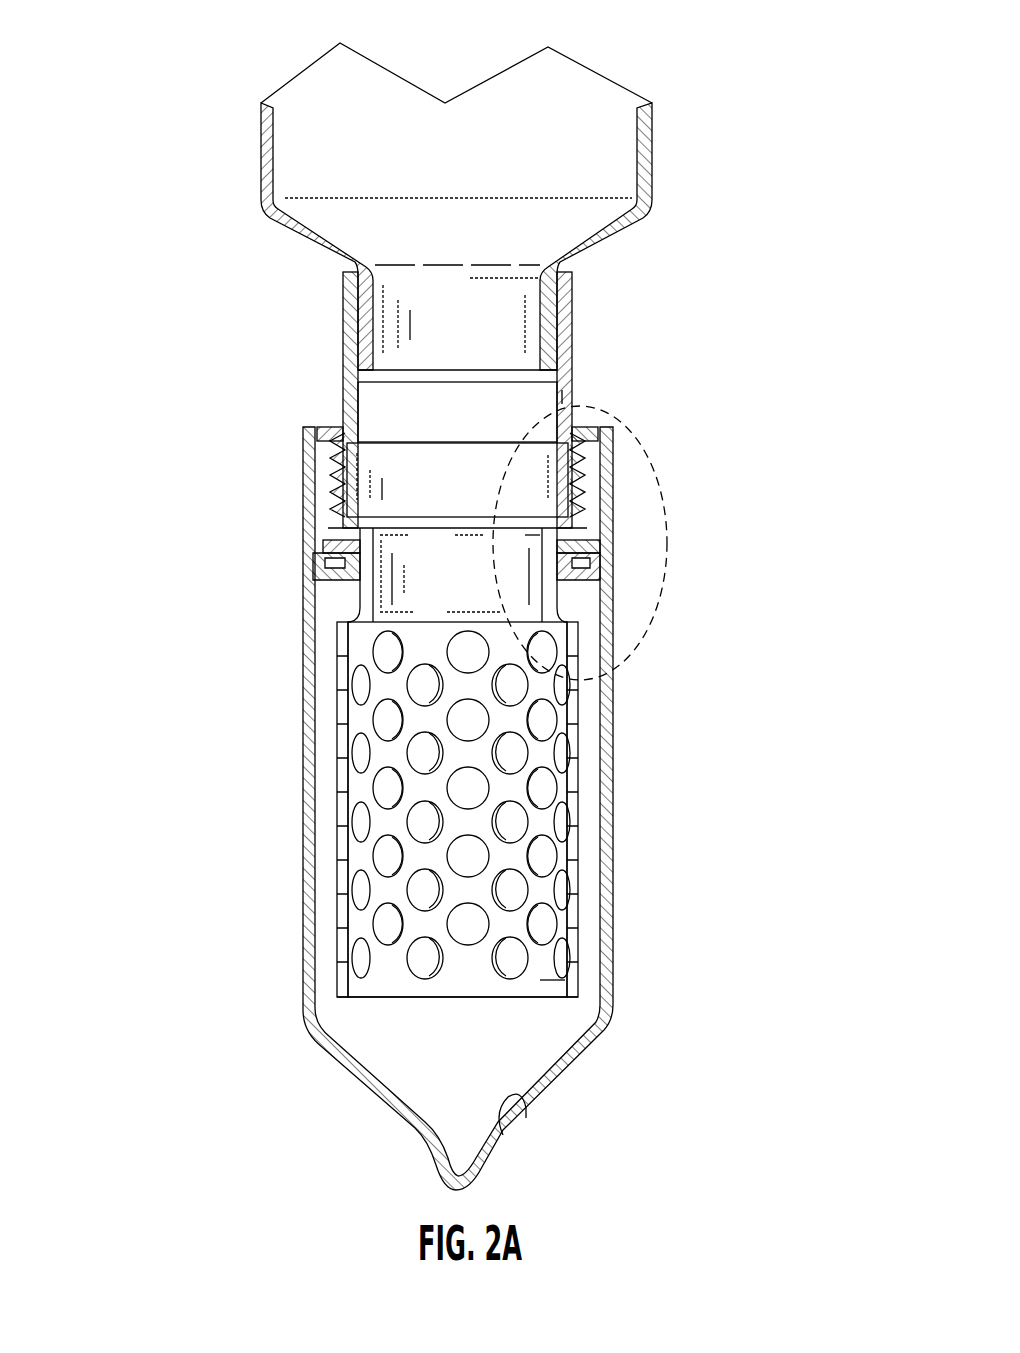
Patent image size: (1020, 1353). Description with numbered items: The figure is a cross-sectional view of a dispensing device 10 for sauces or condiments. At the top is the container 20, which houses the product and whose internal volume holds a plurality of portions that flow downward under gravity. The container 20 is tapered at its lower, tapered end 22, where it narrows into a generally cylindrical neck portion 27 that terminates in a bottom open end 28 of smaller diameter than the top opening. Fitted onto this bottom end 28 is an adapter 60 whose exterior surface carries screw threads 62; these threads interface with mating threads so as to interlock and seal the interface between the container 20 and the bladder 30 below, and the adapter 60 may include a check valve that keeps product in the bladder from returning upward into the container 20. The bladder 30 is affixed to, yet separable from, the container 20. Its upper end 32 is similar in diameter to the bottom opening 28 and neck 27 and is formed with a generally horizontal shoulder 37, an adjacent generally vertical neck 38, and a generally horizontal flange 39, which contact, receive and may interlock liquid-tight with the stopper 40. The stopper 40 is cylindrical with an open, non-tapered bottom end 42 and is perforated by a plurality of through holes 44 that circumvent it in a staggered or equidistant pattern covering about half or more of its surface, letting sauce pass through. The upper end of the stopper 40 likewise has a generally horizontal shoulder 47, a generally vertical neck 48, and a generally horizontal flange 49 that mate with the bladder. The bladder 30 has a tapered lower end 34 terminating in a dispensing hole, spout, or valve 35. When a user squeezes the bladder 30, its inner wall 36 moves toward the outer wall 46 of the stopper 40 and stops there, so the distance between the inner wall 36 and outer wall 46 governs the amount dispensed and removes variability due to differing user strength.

The dispensing device 10 is at (185, 455).
The container 20 is at (302, 156).
The tapered end 22 is at (686, 219).
The neck portion 27 is at (560, 303).
The bottom open end 28 is at (472, 342).
The bladder 30 is at (607, 888).
The upper end 32 is at (640, 577).
The lower end 34 is at (593, 1135).
The dispensing hole, spout, or valve 35 is at (440, 1186).
The inner wall 36 is at (497, 1140).
The shoulder 37 is at (333, 588).
The neck 38 is at (312, 562).
The flange 39 is at (323, 550).
The stopper 40 is at (538, 982).
The bottom end 42 is at (425, 1000).
The through holes 44 is at (427, 960).
The outer wall 46 is at (340, 795).
The shoulder 47 is at (580, 607).
The neck 48 is at (547, 593).
The flange 49 is at (572, 533).
The adapter 60 is at (562, 397).
The screw threads 62 is at (578, 458).